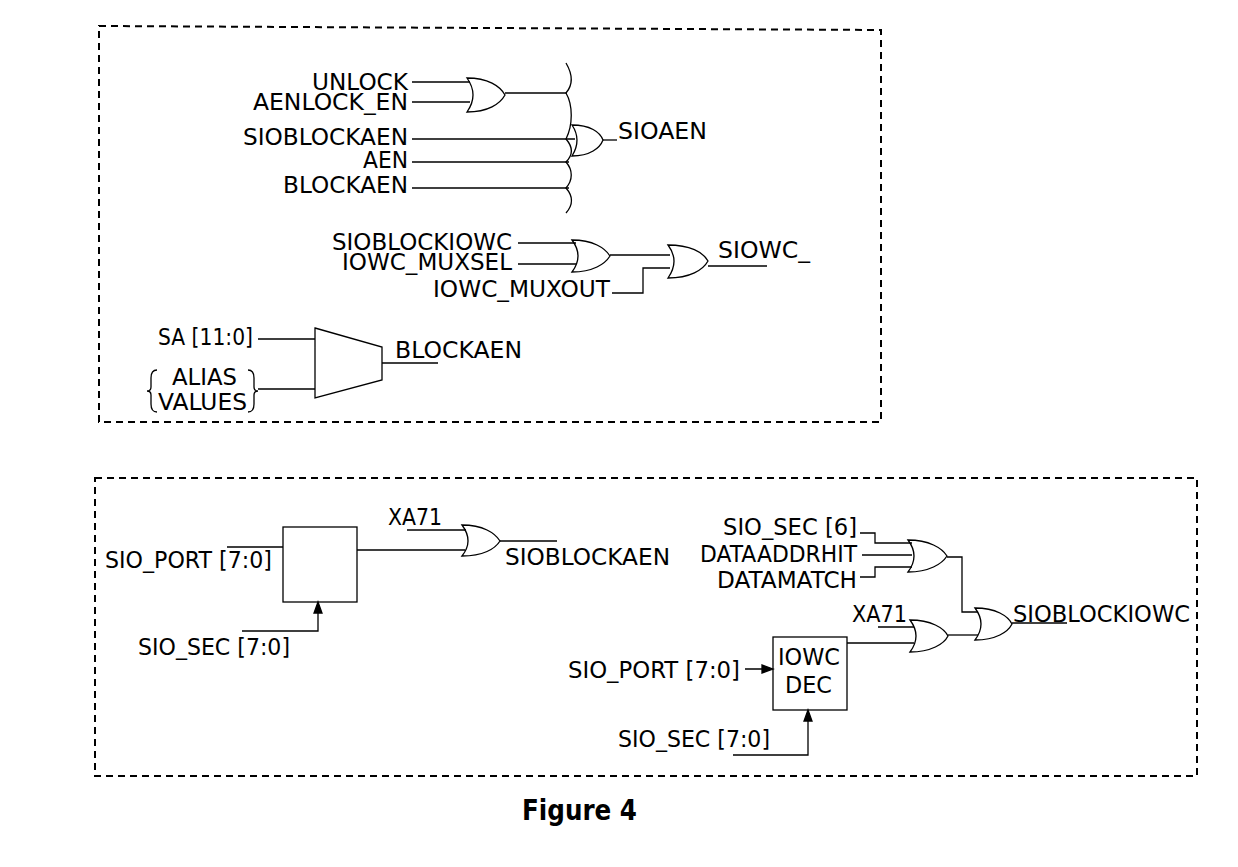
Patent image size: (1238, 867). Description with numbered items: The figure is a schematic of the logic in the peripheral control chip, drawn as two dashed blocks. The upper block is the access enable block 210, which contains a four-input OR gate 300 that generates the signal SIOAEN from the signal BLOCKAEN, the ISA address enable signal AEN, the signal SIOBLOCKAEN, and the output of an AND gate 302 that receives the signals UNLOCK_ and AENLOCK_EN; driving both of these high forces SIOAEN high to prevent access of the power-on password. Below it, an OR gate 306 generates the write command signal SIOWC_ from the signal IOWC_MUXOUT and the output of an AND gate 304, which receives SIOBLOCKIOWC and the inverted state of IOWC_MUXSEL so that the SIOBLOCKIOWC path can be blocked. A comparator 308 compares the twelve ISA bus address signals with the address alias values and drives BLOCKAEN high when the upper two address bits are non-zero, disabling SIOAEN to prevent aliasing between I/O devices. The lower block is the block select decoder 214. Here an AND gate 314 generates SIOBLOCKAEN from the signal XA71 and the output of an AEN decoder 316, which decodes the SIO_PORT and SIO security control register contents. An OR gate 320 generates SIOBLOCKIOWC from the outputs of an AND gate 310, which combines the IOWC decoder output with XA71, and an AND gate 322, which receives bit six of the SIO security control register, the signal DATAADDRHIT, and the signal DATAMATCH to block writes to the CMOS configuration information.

The access enable block 210 is at (773, 30).
The block select decoder 214 is at (1020, 480).
The 4-input OR gate 300 is at (578, 125).
The AND gate 302 is at (482, 77).
The AND gate 304 is at (598, 240).
The OR gate 306 is at (680, 245).
The comparator 308 is at (345, 335).
The AND gate 310 is at (925, 652).
The AND gate 314 is at (473, 523).
The AEN decoder 316 is at (308, 527).
The OR gate 320 is at (990, 608).
The AND gate 322 is at (923, 540).